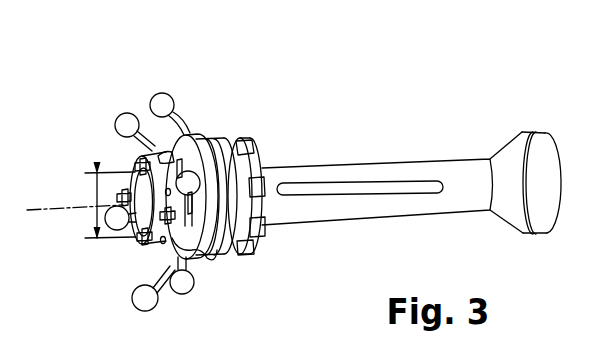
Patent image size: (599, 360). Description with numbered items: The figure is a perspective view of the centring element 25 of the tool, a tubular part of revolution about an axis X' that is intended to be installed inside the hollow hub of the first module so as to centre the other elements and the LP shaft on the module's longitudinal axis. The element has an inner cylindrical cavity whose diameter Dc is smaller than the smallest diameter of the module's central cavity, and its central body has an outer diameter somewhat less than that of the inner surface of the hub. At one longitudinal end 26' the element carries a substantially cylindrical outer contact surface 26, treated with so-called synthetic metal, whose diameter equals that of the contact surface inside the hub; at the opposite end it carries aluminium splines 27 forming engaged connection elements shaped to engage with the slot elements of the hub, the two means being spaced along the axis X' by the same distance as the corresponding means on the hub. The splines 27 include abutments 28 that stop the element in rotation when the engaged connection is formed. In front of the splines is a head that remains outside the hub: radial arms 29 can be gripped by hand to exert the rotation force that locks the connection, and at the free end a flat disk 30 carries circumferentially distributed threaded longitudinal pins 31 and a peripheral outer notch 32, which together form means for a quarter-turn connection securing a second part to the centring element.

The centring element 25 is at (266, 87).
The contact surface 26 is at (516, 144).
The longitudinal end 26' is at (548, 150).
The splines 27 is at (255, 255).
The abutments 28 is at (262, 217).
The radial arms 29 is at (162, 96).
The flat disk 30 is at (203, 250).
The threaded longitudinal pins 31 is at (140, 164).
The outer notch 32 is at (188, 227).
The diameter of the inner cylindrical cavity Dc is at (95, 234).
The axis X' is at (75, 194).